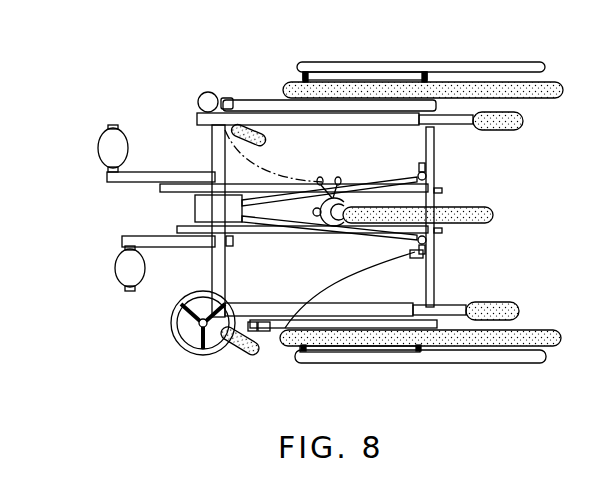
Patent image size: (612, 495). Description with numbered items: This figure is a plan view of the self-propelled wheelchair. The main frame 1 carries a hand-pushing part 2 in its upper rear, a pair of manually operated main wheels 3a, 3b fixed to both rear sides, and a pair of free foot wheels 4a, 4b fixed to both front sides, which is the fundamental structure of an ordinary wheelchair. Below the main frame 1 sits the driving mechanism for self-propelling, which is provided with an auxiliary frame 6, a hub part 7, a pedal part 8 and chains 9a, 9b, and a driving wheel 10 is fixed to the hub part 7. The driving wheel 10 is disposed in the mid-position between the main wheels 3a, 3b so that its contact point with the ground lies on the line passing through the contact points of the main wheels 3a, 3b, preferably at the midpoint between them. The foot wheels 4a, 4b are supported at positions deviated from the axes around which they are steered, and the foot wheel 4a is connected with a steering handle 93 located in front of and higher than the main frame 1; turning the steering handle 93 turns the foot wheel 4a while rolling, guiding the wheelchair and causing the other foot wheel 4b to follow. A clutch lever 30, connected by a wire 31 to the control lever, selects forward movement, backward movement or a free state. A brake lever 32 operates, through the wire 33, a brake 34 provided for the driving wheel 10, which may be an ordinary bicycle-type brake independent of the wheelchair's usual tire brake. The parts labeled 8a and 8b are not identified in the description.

The main frame 1 is at (356, 196).
The hand-pushing part 2 is at (524, 122).
The main wheel 3a is at (489, 352).
The main wheel 3b is at (503, 95).
The foot wheel 4a is at (240, 352).
The foot wheel 4b is at (253, 122).
The auxiliary frame 6 is at (362, 196).
The hub part 7 is at (440, 197).
The pedal part 8 is at (190, 210).
The lower reservoir 8a is at (115, 268).
The upper reservoir 8b is at (98, 143).
The chain 9a is at (326, 362).
The chain 9b is at (268, 186).
The driving wheel 10 is at (495, 214).
The clutch lever 30 is at (264, 333).
The wire 31 is at (399, 364).
The brake lever 32 is at (220, 92).
The wire 33 is at (240, 163).
The brake 34 is at (434, 72).
The steering handle 93 is at (172, 325).